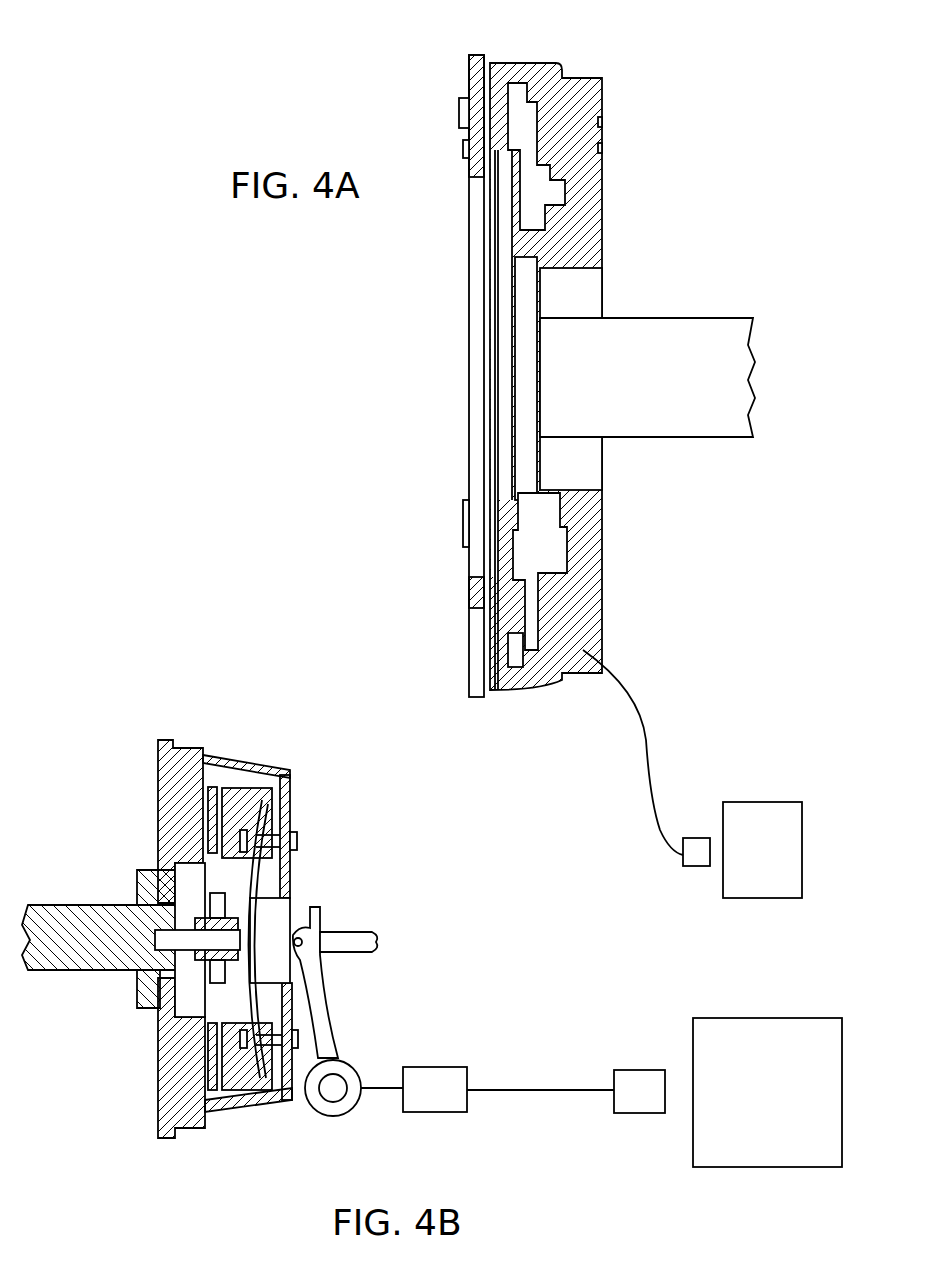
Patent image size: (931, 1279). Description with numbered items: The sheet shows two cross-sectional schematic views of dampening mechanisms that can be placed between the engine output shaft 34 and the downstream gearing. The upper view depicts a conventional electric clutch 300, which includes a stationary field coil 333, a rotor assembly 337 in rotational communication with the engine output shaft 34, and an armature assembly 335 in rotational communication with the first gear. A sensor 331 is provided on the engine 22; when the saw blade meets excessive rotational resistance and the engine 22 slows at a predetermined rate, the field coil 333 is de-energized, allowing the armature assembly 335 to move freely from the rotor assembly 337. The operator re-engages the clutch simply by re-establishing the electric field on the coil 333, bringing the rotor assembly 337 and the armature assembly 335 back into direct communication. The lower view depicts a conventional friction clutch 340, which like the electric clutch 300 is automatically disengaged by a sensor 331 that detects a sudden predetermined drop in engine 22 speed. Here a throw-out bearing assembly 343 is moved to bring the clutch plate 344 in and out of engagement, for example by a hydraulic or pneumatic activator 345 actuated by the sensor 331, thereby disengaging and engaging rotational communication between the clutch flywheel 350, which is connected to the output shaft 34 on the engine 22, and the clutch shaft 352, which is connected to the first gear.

In FIG. 4A, the engine 22 is at (765, 810).
In FIG. 4B, the engine 22 is at (765, 1152).
In FIG. 4A, the engine output shaft 34 is at (676, 333).
In FIG. 4B, the engine output shaft 34 is at (75, 970).
In FIG. 4A, the electric clutch 300 is at (565, 357).
In FIG. 4A, the sensor 331 is at (697, 866).
In FIG. 4B, the sensor 331 is at (638, 1113).
In FIG. 4A, the stationary field coil 333 is at (589, 538).
In FIG. 4A, the armature assembly 335 is at (469, 68).
In FIG. 4A, the rotor assembly 337 is at (521, 72).
In FIG. 4B, the friction clutch 340 is at (298, 904).
In FIG. 4B, the throw-out bearing assembly 343 is at (315, 917).
In FIG. 4B, the clutch plate 344 is at (212, 787).
In FIG. 4B, the hydraulic or pneumatic activator 345 is at (430, 1112).
In FIG. 4B, the clutch flywheel 350 is at (160, 790).
In FIG. 4B, the clutch shaft 352 is at (375, 952).